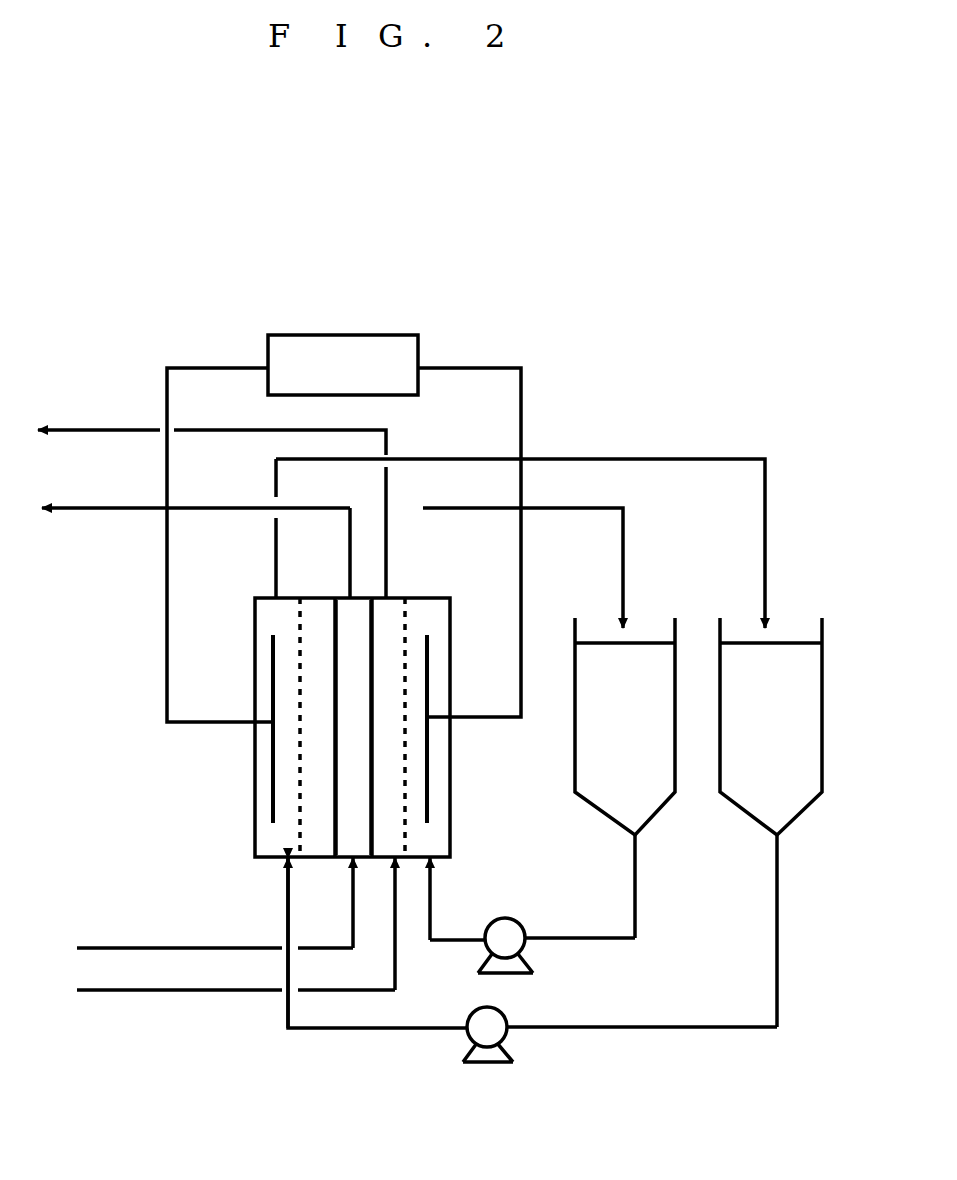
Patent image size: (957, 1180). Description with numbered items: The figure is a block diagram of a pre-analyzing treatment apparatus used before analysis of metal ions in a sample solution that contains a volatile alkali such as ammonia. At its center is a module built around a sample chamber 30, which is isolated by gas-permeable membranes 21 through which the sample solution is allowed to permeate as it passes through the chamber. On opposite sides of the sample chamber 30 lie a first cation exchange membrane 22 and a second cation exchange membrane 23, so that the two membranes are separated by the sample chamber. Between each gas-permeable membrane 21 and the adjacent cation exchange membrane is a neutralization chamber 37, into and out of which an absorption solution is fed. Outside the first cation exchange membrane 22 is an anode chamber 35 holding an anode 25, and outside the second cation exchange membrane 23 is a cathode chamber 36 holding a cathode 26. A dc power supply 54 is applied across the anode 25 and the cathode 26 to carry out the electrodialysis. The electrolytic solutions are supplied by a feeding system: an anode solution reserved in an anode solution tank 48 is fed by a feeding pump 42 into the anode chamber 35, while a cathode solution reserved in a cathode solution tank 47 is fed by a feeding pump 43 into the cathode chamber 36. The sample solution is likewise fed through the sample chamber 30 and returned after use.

The gas-permeable membrane 21 is at (337, 838).
The first cation exchange membrane 22 is at (298, 620).
The second cation exchange membrane 23 is at (403, 628).
The anode 25 is at (272, 683).
The cathode 26 is at (427, 660).
The sample chamber 30 is at (353, 727).
The anode chamber 35 is at (262, 802).
The cathode chamber 36 is at (437, 803).
The neutralization chamber 37 is at (313, 642).
The feeding pump 42 is at (487, 1065).
The feeding pump 43 is at (513, 918).
The cathode solution tank 47 is at (662, 812).
The anode solution tank 48 is at (803, 812).
The dc power supply 54 is at (328, 335).